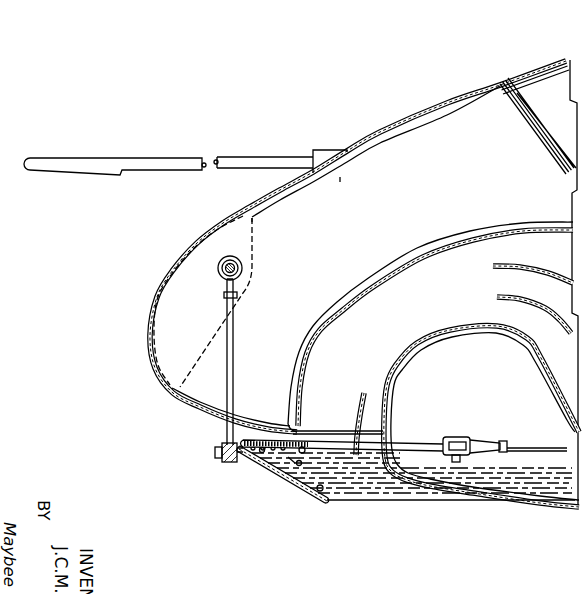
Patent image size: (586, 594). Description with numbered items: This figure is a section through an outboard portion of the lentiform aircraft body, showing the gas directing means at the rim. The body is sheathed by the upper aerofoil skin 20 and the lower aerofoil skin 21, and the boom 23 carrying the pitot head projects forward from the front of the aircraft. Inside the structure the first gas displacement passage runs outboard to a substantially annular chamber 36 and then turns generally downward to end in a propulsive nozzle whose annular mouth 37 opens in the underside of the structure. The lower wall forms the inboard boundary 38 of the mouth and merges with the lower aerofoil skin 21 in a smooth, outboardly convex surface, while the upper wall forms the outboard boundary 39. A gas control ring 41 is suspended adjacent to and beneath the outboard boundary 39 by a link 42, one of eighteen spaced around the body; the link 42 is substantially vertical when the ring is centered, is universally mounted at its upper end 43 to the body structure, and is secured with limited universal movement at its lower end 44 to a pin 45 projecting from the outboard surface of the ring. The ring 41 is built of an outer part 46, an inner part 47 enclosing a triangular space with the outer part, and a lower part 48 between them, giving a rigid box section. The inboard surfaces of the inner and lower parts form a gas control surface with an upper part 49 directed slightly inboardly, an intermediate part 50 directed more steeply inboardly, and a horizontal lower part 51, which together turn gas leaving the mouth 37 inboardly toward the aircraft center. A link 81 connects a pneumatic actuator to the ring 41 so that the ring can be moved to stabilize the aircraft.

The upper aerofoil skin 20 is at (382, 131).
The lower aerofoil skin 21 is at (540, 504).
The boom 23 is at (217, 155).
The annular chamber 36 is at (452, 280).
The annular mouth 37 is at (330, 431).
The inboard boundary of the mouth 38 is at (407, 478).
The outboard boundary of the mouth 39 is at (303, 373).
The gas control ring 41 is at (287, 472).
The link 42 is at (233, 323).
The upper end of link 43 is at (241, 263).
The lower end of link 44 is at (226, 461).
The pin 45 is at (214, 452).
The outer part of ring 46 is at (262, 452).
The inner part of ring 47 is at (290, 460).
The lower part of ring 48 is at (332, 501).
The upper part of gas control surface 49 is at (298, 465).
The intermediate part of gas control surface 50 is at (320, 491).
The lower part of gas control surface 51 is at (347, 497).
The link 81 is at (540, 449).